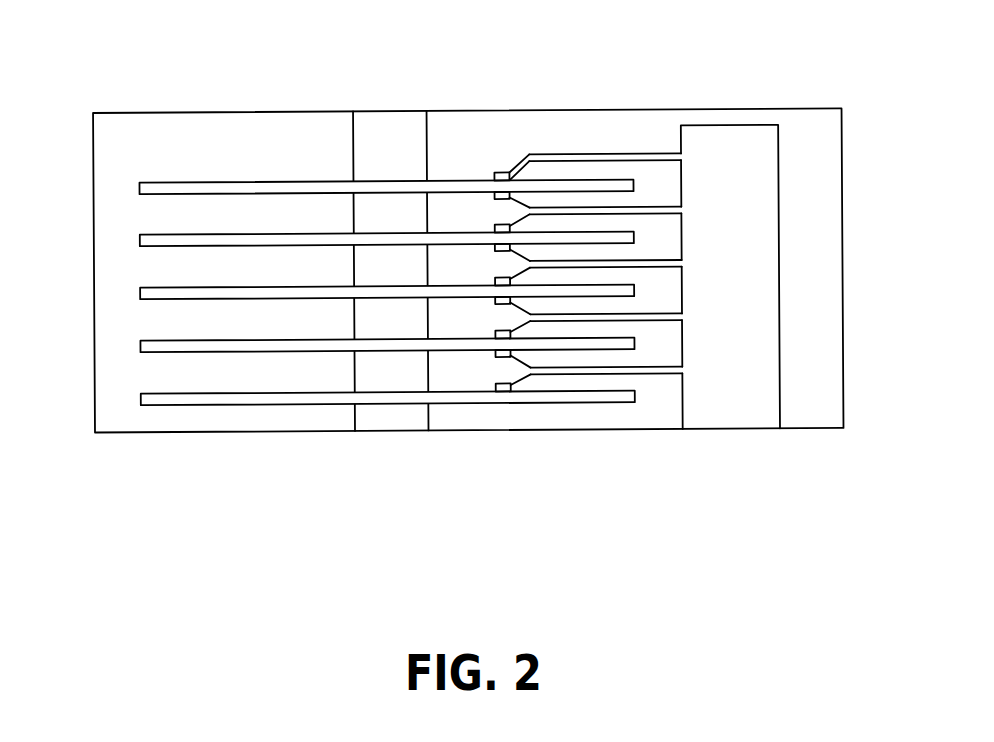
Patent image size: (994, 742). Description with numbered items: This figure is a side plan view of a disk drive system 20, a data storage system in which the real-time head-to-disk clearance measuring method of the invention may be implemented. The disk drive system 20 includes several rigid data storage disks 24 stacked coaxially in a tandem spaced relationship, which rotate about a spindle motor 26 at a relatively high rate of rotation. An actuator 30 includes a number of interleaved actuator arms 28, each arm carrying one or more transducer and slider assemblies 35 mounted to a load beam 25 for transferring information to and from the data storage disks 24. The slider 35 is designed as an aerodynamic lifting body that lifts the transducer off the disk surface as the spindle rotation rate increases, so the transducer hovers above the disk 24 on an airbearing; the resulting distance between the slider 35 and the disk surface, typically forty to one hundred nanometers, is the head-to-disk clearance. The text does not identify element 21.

The disk drive system 20 is at (462, 245).
The substrate 21 is at (843, 307).
The data storage disks 24 is at (140, 187).
The load beam 25 is at (520, 168).
The spindle motor 26 is at (385, 422).
The actuator arms 28 is at (583, 153).
The actuator 30 is at (732, 403).
The slider 35 is at (495, 172).